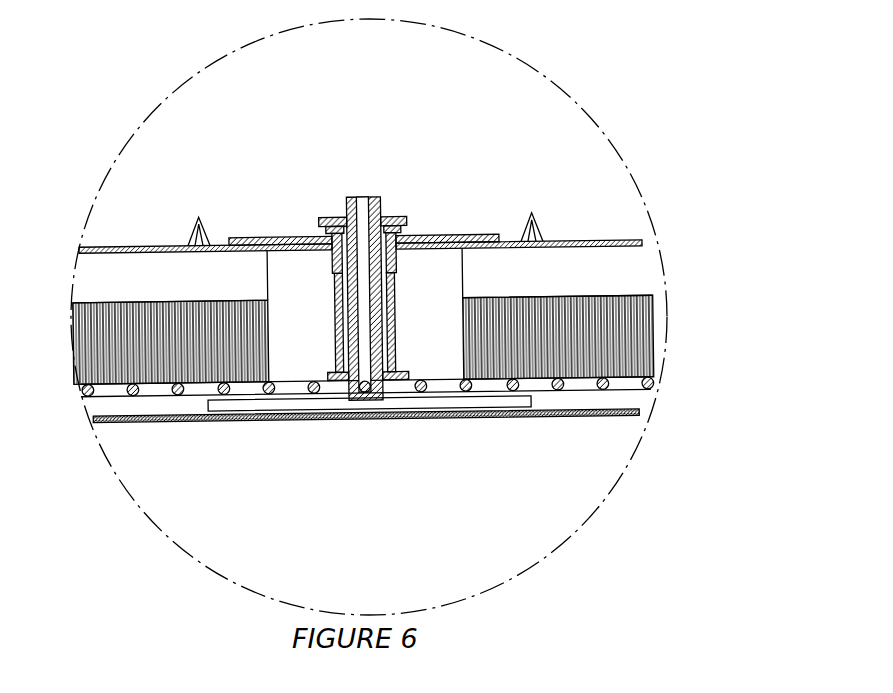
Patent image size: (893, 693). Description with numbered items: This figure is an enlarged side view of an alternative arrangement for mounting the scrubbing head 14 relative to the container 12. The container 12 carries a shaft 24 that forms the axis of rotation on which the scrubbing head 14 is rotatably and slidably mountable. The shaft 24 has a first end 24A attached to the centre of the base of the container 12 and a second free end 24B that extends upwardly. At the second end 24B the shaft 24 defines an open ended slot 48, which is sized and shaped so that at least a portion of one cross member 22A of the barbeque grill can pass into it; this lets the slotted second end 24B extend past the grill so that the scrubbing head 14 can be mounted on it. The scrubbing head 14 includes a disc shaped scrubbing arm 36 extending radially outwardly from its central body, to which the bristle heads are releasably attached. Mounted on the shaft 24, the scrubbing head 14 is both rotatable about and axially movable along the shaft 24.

The container 12 is at (572, 418).
The scrubbing head 14 is at (590, 242).
The cross member 22A is at (380, 400).
The shaft 24 is at (380, 307).
The first end 24A is at (390, 400).
The second free end 24B is at (380, 197).
The scrubbing arm 36 is at (140, 246).
The slot 48 is at (363, 275).